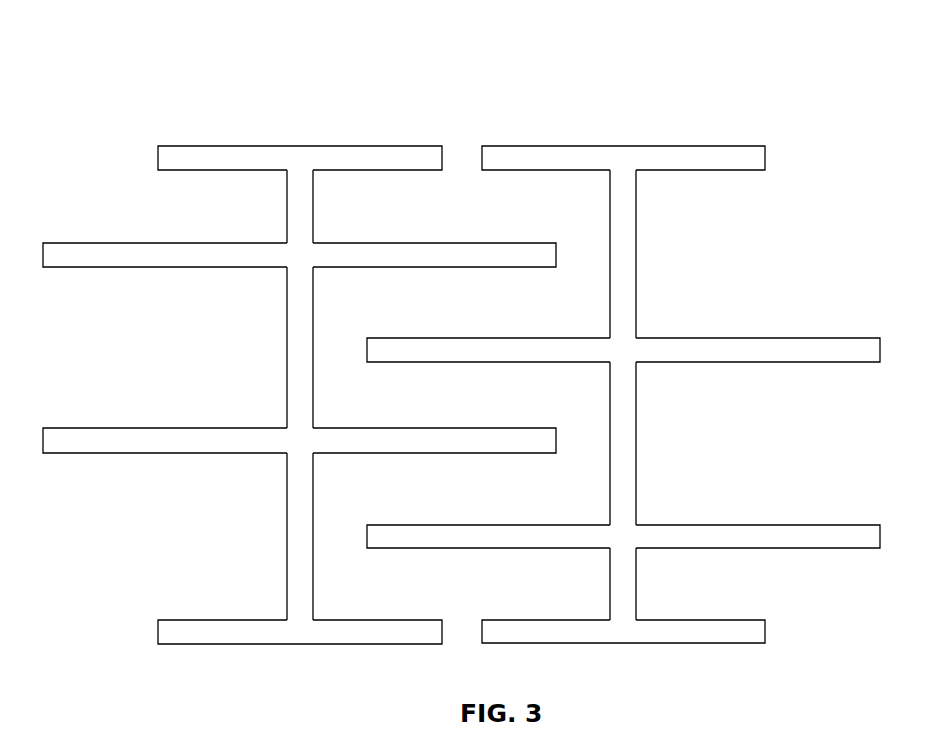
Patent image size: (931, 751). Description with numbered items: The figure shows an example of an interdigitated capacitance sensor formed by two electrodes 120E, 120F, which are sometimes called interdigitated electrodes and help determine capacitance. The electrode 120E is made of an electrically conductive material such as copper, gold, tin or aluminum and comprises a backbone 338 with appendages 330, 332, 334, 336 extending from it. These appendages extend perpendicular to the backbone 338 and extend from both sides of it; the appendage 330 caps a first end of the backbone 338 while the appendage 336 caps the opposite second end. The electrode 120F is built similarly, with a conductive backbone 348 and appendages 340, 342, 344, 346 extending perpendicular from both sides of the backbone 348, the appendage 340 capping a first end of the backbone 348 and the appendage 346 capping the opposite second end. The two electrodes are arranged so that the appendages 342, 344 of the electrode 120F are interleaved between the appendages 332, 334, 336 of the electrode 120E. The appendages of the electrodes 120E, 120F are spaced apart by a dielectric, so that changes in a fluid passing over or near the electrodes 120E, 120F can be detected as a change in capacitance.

The electrode 120E is at (138, 124).
The electrode 120F is at (777, 116).
The appendage 330 is at (432, 170).
The appendage 332 is at (432, 267).
The appendage 334 is at (432, 453).
The appendage 336 is at (382, 644).
The backbone 338 is at (287, 338).
The appendage 340 is at (507, 170).
The appendage 342 is at (478, 362).
The appendage 344 is at (478, 548).
The appendage 346 is at (556, 643).
The backbone 348 is at (636, 420).